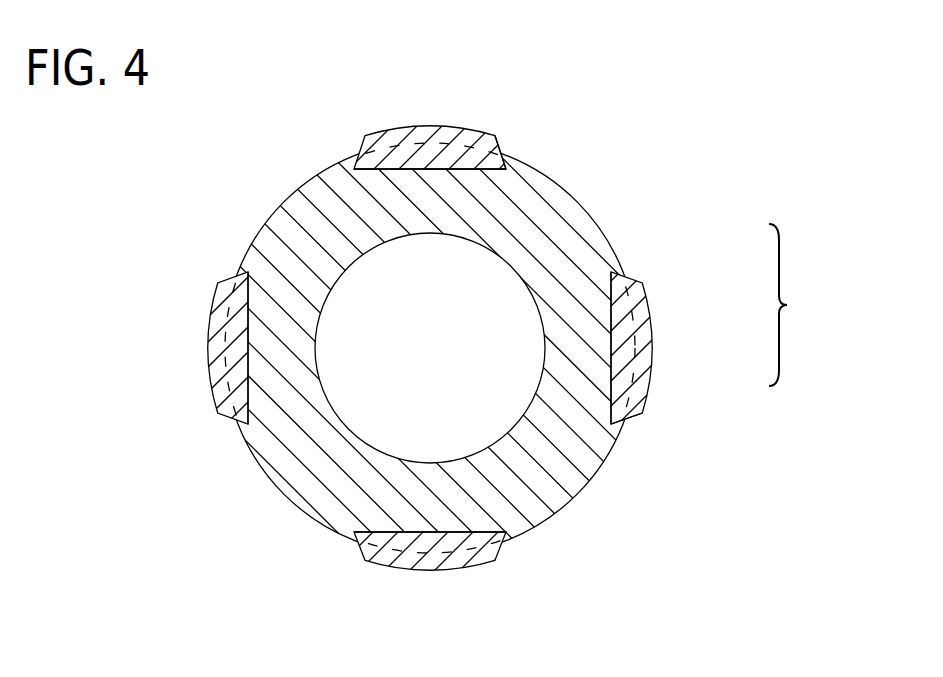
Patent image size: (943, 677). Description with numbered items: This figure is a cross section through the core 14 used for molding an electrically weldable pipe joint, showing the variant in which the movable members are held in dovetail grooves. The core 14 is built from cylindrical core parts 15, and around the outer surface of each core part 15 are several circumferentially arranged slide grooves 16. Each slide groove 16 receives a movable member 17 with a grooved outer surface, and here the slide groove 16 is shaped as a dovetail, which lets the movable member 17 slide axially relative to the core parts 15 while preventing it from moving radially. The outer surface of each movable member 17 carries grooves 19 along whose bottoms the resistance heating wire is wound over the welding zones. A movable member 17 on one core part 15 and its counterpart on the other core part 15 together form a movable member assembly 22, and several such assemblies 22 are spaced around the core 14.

The core 14 is at (795, 305).
The core part 15 is at (604, 237).
The slide groove 16 is at (400, 177).
The movable member 17 is at (505, 168).
The groove 19 is at (460, 133).
The movable member assembly 22 is at (363, 152).